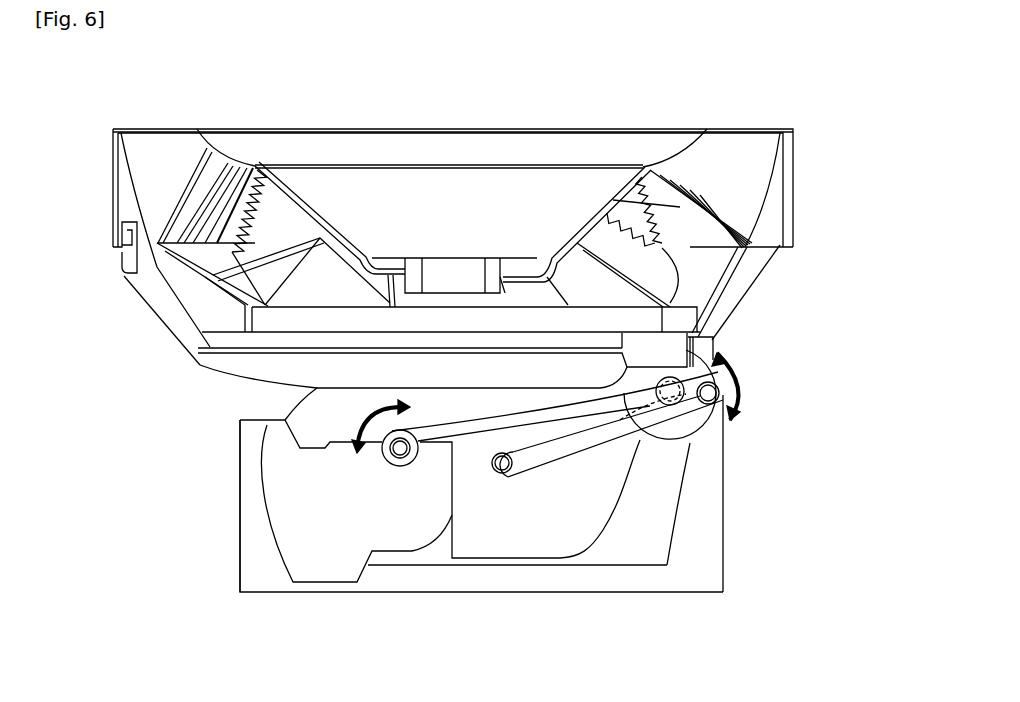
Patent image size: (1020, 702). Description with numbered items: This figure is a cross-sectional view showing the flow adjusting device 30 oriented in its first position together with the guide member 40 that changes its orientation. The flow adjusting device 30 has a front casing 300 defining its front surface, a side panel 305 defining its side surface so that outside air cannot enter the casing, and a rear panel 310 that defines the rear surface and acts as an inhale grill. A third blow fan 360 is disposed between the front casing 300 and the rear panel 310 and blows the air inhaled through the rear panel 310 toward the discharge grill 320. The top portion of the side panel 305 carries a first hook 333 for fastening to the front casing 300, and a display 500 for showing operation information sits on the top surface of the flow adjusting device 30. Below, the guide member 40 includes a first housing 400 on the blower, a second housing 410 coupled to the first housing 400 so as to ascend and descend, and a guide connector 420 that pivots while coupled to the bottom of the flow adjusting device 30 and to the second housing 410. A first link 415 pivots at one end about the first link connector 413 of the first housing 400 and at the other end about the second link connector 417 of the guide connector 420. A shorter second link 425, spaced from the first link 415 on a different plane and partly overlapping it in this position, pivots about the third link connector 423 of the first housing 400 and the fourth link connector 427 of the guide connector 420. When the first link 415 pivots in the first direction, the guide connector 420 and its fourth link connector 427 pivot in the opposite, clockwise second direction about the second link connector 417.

The flow adjusting device 30 is at (185, 307).
The guide member 40 is at (187, 482).
The front casing 300 is at (778, 210).
The side panel 305 is at (780, 270).
The rear panel 310 is at (240, 361).
The discharge grill 320 is at (187, 213).
The first hook 333 is at (130, 263).
The third blow fan 360 is at (398, 187).
The first housing 400 is at (710, 530).
The second housing 410 is at (603, 480).
The first link connector 413 is at (395, 458).
The first link 415 is at (405, 458).
The second link connector 417 is at (713, 357).
The guide connector 420 is at (688, 452).
The third link connector 423 is at (503, 467).
The second link 425 is at (533, 463).
The fourth link connector 427 is at (720, 387).
The display 500 is at (478, 152).